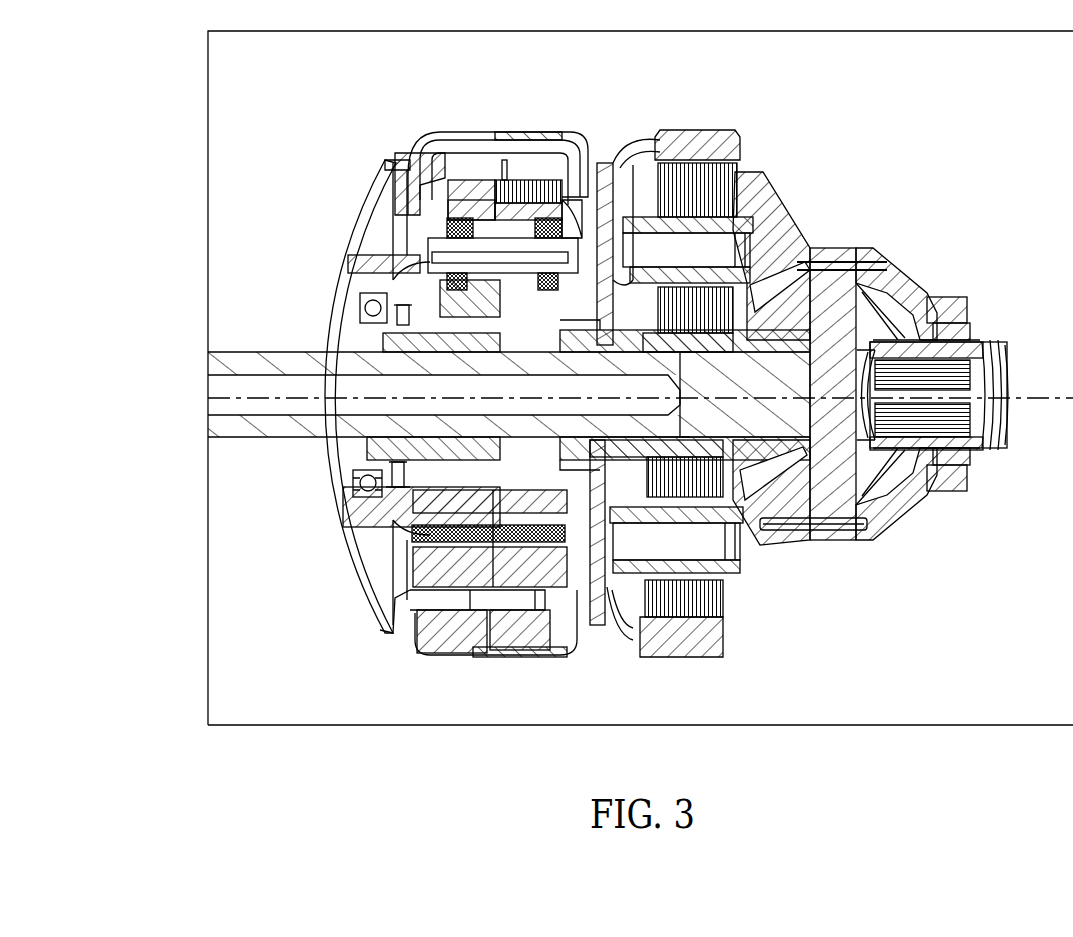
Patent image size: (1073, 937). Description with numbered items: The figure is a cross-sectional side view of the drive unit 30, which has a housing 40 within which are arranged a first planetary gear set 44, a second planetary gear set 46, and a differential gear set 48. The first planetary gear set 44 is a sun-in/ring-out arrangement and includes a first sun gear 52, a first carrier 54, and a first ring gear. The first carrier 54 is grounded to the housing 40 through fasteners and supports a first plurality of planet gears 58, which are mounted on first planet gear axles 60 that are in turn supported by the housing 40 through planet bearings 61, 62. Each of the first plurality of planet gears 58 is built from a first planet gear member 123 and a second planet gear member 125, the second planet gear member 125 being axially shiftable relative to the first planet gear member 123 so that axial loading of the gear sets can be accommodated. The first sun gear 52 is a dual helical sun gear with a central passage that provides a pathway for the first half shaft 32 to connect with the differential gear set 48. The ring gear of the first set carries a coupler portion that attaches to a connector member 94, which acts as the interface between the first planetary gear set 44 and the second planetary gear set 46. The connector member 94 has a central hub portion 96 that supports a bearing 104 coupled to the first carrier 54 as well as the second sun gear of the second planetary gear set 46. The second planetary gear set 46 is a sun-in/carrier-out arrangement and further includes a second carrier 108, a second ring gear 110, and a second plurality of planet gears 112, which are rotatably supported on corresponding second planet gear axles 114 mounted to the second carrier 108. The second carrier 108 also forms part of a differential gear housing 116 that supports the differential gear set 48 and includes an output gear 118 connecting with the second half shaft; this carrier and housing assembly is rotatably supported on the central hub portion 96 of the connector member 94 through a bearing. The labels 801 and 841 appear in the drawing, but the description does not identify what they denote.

The drive unit 30 is at (298, 125).
The first half shaft 32 is at (237, 372).
The housing 40 is at (378, 235).
The first planetary gear set 44 is at (398, 152).
The second planetary gear set 46 is at (752, 160).
The differential gear set 48 is at (887, 513).
The first sun gear 52 is at (378, 340).
The first carrier 54 is at (640, 163).
The first plurality of planet gears 58 is at (418, 188).
The first planet gear axles 60 is at (455, 248).
The planet bearing 61 is at (465, 262).
The planet bearing 62 is at (543, 227).
The connector member 94 is at (588, 267).
The central hub portion 96 is at (578, 353).
The bearing 104 is at (420, 467).
The second carrier 108 is at (780, 250).
The second ring gear 110 is at (695, 138).
The second plurality of planet gears 112 is at (730, 628).
The second planet gear axles 114 is at (650, 227).
The differential gear housing 116 is at (900, 280).
The output gear 118 is at (953, 420).
The first planet gear member 123 is at (457, 197).
The second planet gear member 125 is at (528, 193).
The bearing 801 is at (460, 170).
The spacer 841 is at (553, 170).